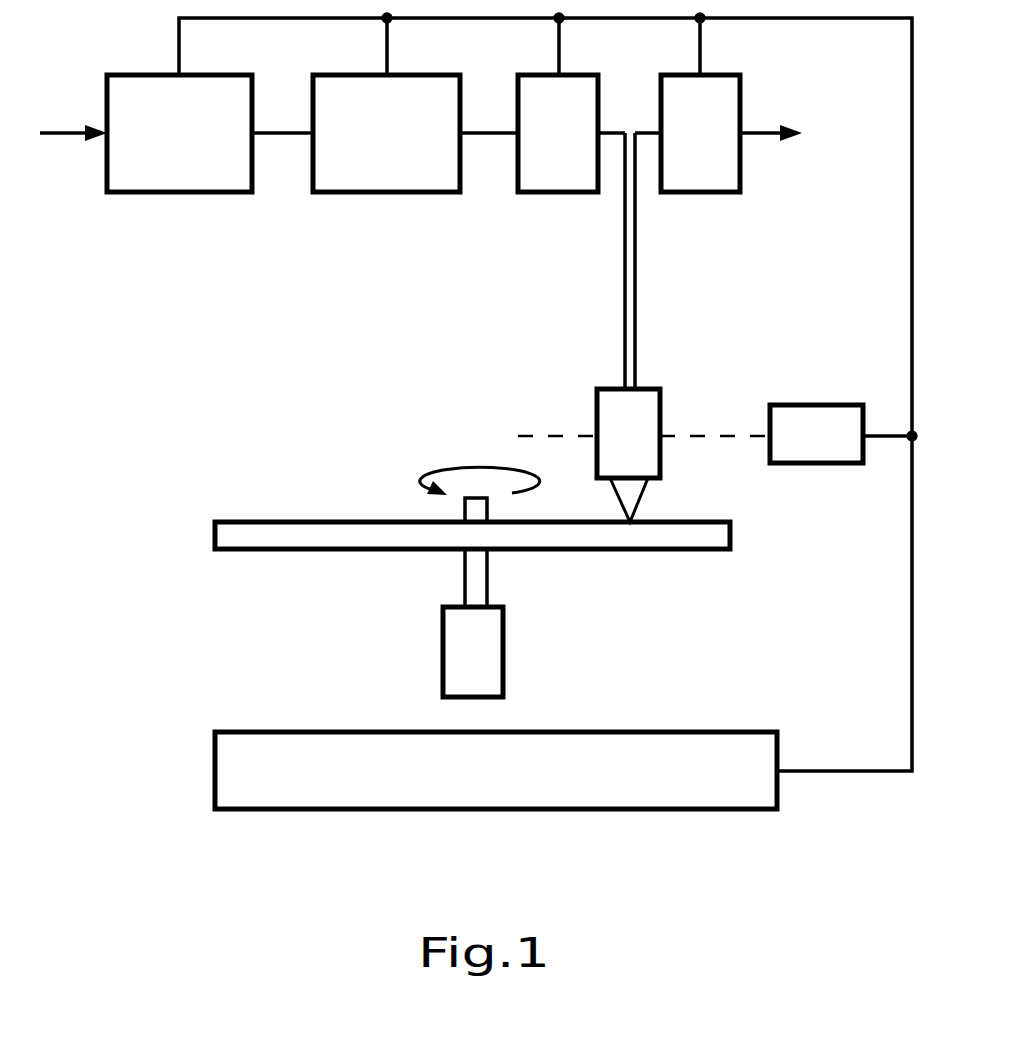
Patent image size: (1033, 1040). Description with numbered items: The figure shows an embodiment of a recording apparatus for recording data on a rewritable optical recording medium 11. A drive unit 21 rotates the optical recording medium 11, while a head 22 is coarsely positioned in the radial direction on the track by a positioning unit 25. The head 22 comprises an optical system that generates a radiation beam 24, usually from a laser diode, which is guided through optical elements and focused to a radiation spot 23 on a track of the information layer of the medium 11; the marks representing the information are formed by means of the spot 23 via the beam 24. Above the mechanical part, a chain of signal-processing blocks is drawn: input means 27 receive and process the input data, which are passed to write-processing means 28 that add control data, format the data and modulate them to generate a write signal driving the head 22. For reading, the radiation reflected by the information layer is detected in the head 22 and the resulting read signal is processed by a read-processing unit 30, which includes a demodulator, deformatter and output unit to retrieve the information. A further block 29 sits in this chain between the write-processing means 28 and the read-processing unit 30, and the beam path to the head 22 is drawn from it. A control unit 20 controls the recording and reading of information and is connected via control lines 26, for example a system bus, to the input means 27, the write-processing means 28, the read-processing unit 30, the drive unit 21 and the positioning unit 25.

The rewritable optical recording medium 11 is at (693, 537).
The control unit 20 is at (728, 788).
The drive unit 21 is at (490, 633).
The head 22 is at (613, 410).
The radiation spot 23 is at (640, 517).
The radiation beam 24 is at (612, 498).
The positioning unit 25 is at (835, 452).
The control lines 26 is at (912, 220).
The input means 27 is at (173, 170).
The write-processing means 28 is at (393, 170).
The modulator 29 is at (561, 170).
The read-processing unit 30 is at (710, 170).